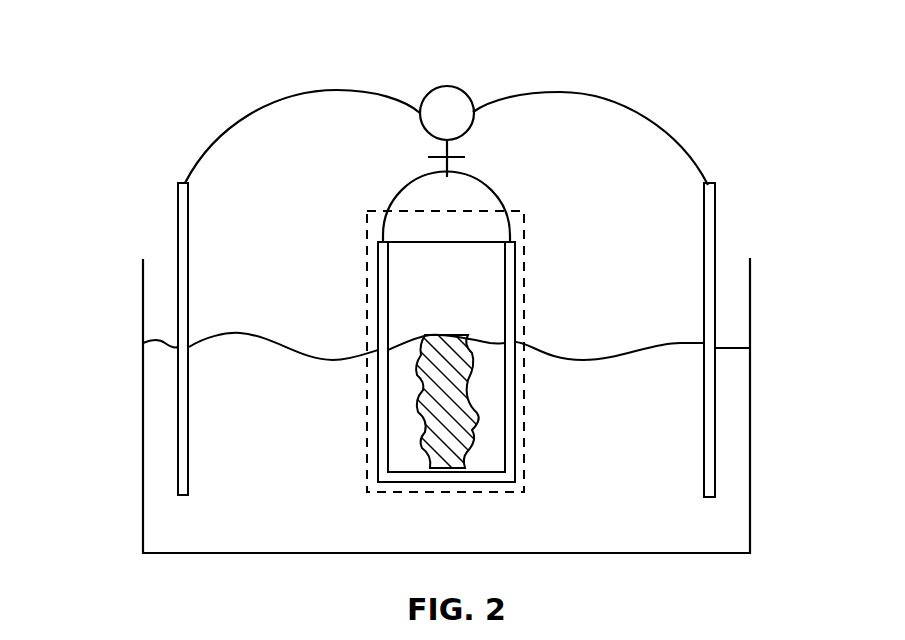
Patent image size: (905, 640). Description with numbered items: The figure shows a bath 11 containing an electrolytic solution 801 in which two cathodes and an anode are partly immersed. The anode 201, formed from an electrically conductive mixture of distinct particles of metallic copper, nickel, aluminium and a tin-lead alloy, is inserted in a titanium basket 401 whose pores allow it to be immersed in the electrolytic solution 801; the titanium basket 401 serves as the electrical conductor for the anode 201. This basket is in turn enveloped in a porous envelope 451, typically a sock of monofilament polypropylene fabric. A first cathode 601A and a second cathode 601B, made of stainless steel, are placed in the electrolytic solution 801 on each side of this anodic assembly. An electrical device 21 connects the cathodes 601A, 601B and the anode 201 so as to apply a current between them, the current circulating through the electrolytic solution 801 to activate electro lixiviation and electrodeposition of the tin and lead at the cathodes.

The bath 11 is at (143, 290).
The electrical device 21 is at (445, 87).
The anode 201 is at (448, 443).
The titanium basket 401 is at (378, 422).
The porous envelope 451 is at (367, 455).
The first cathode 601A is at (178, 417).
The second cathode 601B is at (715, 403).
The electrolytic solution 801 is at (693, 527).